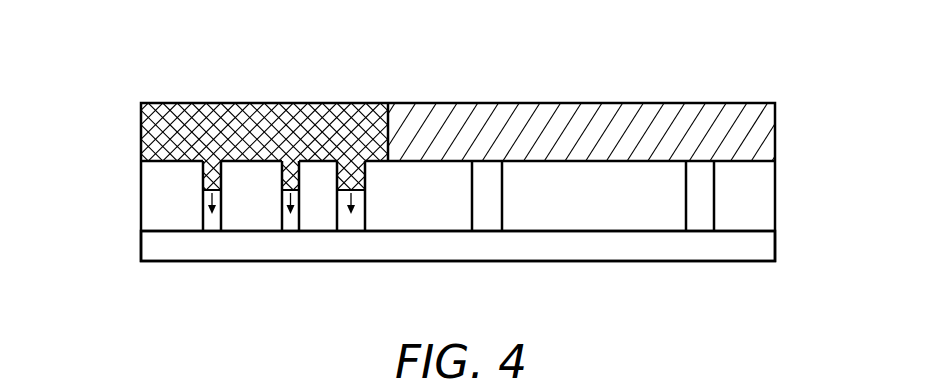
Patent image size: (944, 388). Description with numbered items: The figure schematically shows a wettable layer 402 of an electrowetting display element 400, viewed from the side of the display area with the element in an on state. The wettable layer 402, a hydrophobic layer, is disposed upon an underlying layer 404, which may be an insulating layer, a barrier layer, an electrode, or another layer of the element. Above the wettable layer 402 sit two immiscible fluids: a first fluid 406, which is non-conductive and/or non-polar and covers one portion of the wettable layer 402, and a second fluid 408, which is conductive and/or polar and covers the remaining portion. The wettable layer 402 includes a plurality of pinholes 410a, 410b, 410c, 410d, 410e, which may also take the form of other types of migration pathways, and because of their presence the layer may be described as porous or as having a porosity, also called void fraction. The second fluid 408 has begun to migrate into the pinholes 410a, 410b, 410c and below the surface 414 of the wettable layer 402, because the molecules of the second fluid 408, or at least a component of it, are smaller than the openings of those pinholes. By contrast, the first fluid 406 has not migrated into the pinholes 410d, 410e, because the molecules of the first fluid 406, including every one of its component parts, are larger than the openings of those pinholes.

The electrowetting display element 400 is at (689, 72).
The wettable layer 402 is at (155, 200).
The underlying layer 404 is at (150, 247).
The first fluid 406 is at (527, 118).
The second fluid 408 is at (338, 120).
The surface of wettable layer 414 is at (155, 161).
The pinhole 410a is at (215, 222).
The pinhole 410b is at (292, 222).
The pinhole 410c is at (360, 222).
The pinhole 410d is at (490, 222).
The pinhole 410e is at (702, 222).